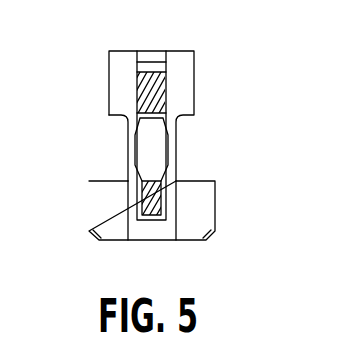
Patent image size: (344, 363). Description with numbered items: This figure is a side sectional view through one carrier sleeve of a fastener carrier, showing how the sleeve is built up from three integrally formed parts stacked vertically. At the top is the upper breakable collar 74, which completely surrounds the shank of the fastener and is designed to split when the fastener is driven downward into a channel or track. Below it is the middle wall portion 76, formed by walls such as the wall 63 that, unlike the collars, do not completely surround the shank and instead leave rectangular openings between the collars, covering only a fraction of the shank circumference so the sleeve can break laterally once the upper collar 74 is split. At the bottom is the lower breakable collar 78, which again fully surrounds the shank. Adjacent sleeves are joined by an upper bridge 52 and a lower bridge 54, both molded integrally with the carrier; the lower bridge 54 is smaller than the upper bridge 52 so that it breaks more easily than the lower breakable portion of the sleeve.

The upper breakable collar 74 is at (183, 72).
The upper bridge 52 is at (166, 100).
The wall 63 is at (136, 151).
The middle wall portion 76 is at (170, 148).
The lower bridge 54 is at (157, 216).
The lower breakable collar 78 is at (190, 233).